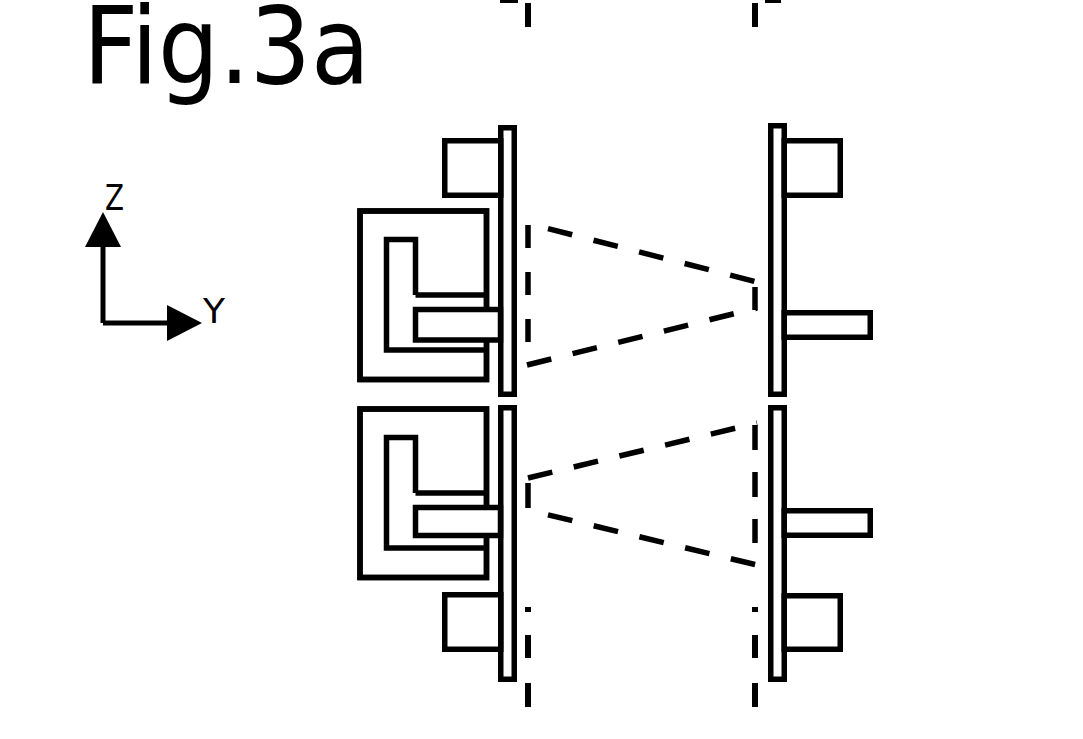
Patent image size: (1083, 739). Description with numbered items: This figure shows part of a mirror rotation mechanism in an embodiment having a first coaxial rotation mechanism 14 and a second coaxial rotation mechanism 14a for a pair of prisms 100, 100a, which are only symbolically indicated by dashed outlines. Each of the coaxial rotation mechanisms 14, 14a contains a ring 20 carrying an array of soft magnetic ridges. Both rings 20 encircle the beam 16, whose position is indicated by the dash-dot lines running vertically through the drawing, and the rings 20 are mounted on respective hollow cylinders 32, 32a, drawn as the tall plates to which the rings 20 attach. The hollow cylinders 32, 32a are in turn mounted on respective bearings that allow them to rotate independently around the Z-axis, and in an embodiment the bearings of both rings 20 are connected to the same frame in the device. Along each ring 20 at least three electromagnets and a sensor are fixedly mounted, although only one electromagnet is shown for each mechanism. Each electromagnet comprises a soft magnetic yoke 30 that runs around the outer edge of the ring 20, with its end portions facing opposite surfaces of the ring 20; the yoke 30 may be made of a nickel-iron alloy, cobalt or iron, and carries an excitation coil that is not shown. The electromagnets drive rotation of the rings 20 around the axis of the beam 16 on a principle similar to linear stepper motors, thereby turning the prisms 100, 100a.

The first coaxial rotation mechanism 14 is at (296, 420).
The second coaxial rotation mechanism 14a is at (309, 251).
The beam 16 is at (755, 636).
The ring 20 is at (418, 521).
The soft magnetic yoke 30 is at (357, 325).
The hollow cylinder 32 is at (505, 679).
The hollow cylinder 32a is at (517, 183).
The prism 100 is at (600, 528).
The prism 100a is at (695, 262).